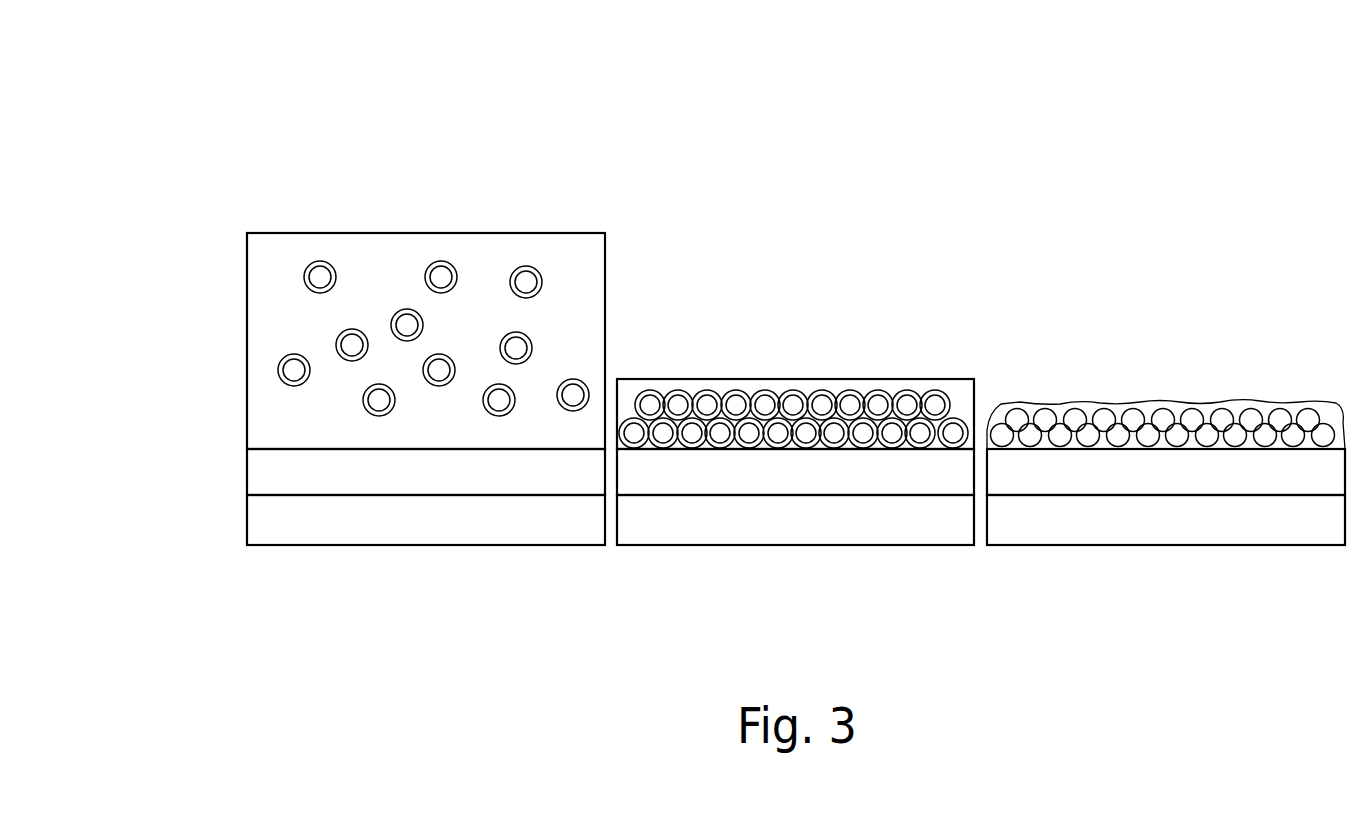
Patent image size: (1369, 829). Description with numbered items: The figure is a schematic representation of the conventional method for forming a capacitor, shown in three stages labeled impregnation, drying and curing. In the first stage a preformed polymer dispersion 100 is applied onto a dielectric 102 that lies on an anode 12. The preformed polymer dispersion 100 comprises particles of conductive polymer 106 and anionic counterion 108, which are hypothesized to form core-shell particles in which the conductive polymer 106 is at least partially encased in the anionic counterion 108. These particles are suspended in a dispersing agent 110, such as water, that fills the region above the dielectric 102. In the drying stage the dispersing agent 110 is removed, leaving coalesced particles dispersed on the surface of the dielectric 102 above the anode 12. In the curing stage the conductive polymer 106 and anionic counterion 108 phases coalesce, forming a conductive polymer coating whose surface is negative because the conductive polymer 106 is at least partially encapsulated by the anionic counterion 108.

The preformed polymer dispersion 100 is at (616, 208).
The dielectric 102 is at (265, 475).
The conductive polymer 106 is at (318, 275).
The anionic counterion 108 is at (303, 278).
The dispersing agent 110 is at (549, 252).
The anode 12 is at (273, 523).